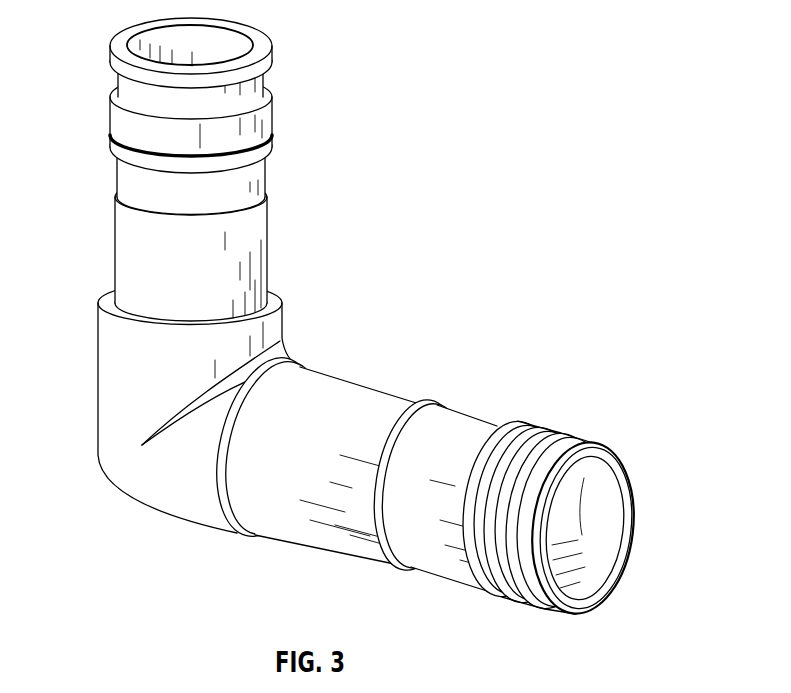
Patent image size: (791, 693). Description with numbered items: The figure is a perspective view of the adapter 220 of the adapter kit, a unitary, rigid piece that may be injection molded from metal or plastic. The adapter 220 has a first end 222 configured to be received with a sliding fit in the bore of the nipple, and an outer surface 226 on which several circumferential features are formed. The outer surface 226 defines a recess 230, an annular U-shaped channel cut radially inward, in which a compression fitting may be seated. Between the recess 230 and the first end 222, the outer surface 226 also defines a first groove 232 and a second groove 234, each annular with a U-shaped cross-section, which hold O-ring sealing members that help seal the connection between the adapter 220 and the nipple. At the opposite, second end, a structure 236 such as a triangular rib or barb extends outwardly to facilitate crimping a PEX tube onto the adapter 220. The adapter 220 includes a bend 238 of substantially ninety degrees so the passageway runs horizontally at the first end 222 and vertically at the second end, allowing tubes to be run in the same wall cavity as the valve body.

The adapter 220 is at (369, 318).
The first end 222 is at (633, 532).
The outer surface 226 is at (375, 376).
The recess 230 is at (480, 408).
The first groove 232 is at (523, 430).
The second groove 234 is at (565, 443).
The structure 236 is at (111, 146).
The bend 238 is at (103, 462).